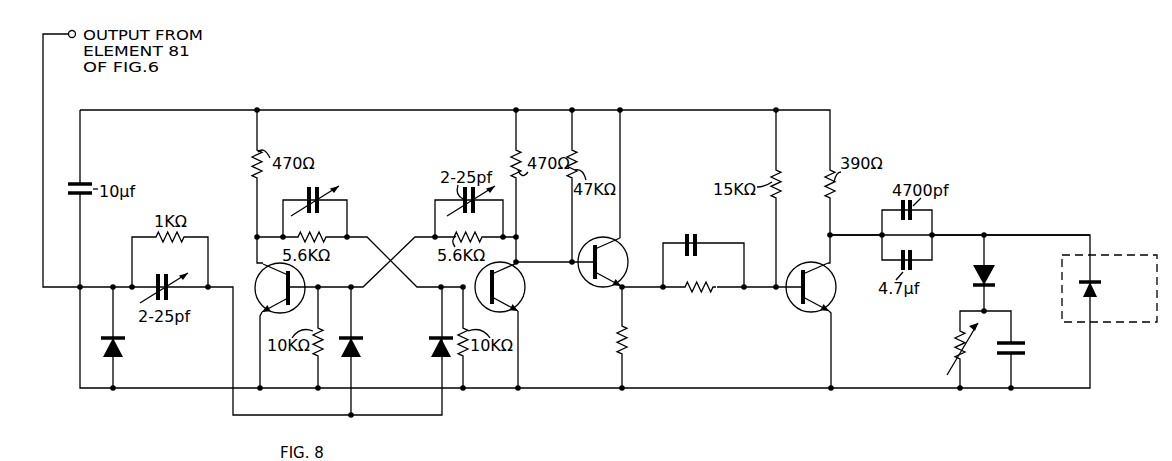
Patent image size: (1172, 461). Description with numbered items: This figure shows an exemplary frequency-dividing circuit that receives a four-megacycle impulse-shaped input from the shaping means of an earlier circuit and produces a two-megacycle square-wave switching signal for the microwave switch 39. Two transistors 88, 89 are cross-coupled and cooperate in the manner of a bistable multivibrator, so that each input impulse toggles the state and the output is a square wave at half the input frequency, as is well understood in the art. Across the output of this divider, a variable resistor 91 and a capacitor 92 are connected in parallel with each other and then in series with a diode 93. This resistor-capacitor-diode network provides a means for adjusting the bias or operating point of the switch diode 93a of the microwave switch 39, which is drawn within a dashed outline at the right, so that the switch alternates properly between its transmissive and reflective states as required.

The transistor 88 is at (296, 278).
The transistor 89 is at (514, 288).
The variable resistor 91 is at (958, 333).
The capacitor 92 is at (1027, 348).
The diode 93 is at (996, 271).
The switch diode 93a is at (1101, 289).
The microwave switch 39 is at (1118, 254).